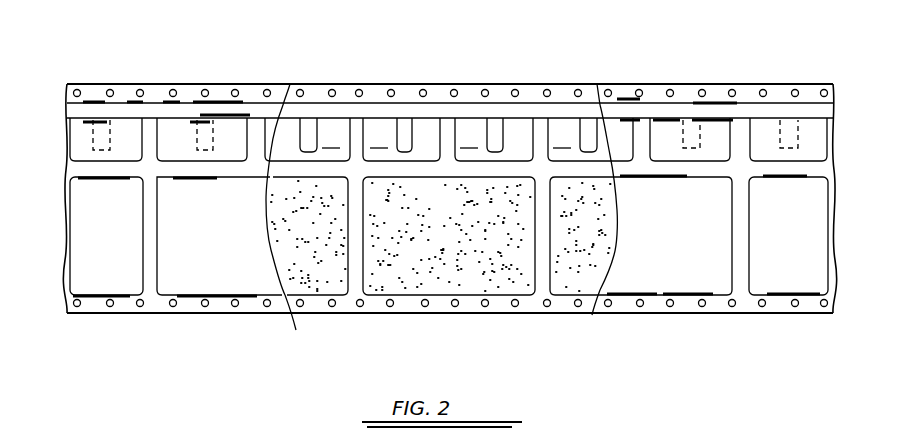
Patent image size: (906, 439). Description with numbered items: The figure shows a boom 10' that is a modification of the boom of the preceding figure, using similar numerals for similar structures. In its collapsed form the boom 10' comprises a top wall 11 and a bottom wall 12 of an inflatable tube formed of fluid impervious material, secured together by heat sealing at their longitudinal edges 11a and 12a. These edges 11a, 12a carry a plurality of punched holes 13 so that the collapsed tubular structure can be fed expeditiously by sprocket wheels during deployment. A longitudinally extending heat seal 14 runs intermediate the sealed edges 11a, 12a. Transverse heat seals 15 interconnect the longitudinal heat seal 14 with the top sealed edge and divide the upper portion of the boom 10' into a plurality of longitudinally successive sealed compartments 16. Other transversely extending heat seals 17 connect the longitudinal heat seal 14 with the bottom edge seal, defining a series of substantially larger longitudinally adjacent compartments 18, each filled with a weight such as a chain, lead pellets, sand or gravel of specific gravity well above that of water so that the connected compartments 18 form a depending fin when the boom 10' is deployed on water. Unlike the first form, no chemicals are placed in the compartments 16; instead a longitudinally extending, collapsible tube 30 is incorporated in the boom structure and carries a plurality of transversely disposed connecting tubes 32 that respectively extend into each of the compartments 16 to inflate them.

The boom 10' is at (449, 163).
The top wall 11 is at (270, 245).
The longitudinal edge 11a is at (290, 84).
The bottom wall 12 is at (497, 96).
The longitudinal edge 12a is at (331, 84).
The punched holes 13 is at (234, 91).
The longitudinal heat seal 14 is at (449, 236).
The transverse heat seals 15 is at (152, 117).
The compartments 16 is at (122, 127).
The transverse heat seals 17 is at (152, 250).
The compartments 18 is at (324, 256).
The collapsible tube 30 is at (687, 108).
The connecting tubes 32 is at (82, 124).